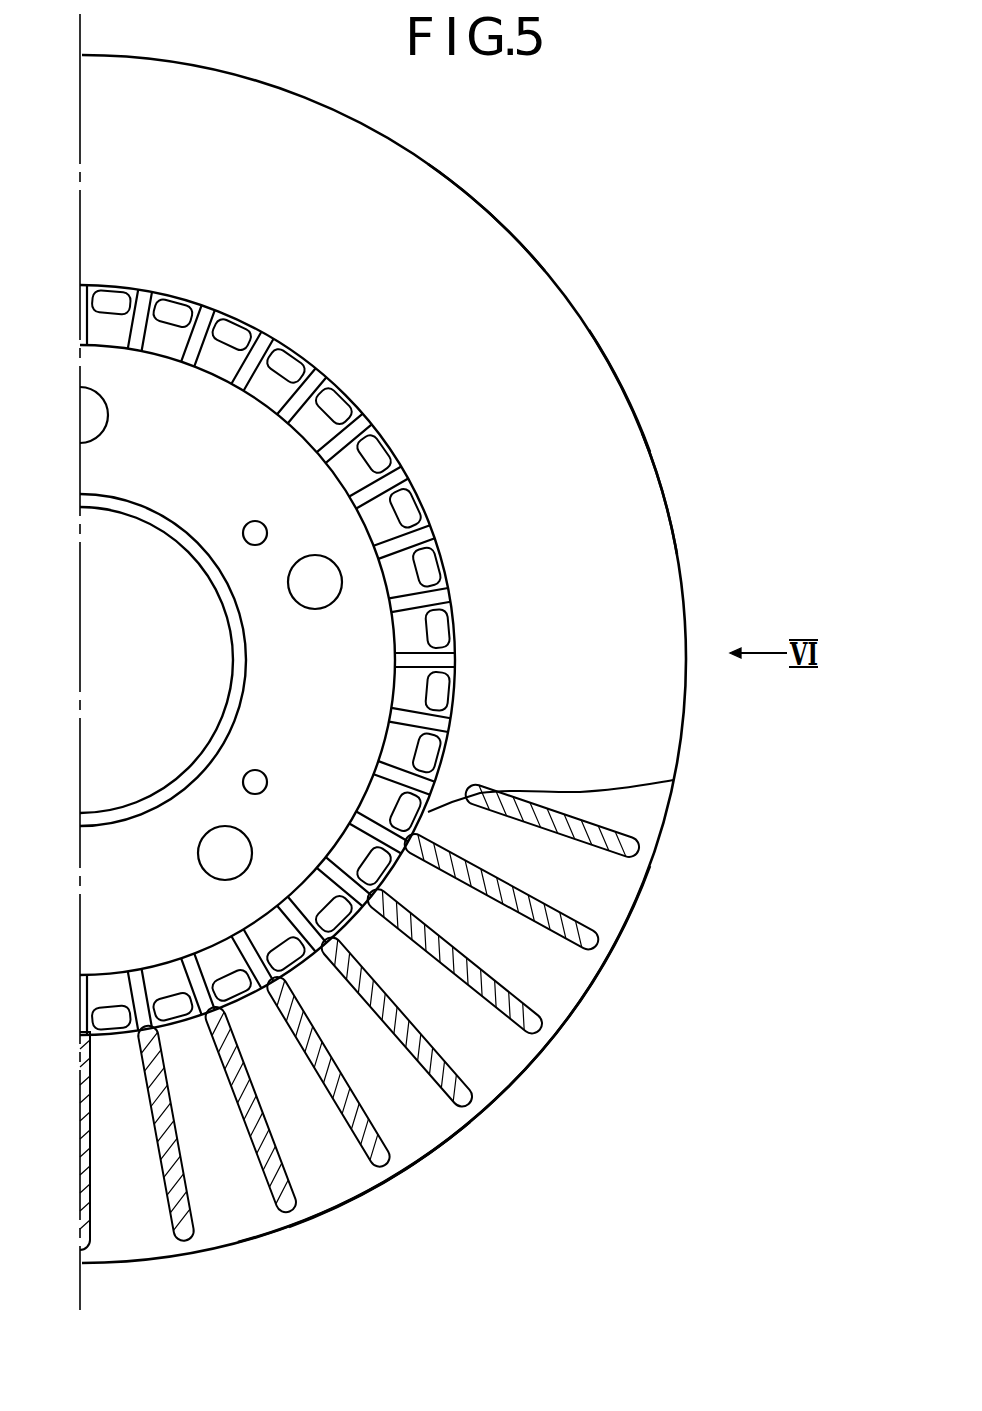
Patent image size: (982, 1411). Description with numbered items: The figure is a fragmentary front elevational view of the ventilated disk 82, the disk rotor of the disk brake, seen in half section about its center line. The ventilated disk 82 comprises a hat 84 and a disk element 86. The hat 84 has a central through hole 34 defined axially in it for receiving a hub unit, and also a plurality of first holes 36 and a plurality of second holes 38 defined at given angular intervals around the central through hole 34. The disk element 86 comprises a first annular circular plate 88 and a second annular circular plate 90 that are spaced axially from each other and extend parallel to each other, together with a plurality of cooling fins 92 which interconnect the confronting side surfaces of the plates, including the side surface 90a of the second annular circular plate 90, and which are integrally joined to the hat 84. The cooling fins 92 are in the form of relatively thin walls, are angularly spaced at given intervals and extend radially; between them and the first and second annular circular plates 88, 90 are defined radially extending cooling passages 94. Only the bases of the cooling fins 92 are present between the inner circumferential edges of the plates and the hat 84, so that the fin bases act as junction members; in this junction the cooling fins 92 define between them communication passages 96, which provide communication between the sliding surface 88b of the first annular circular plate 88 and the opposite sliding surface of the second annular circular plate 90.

The ventilated disk 82 is at (636, 98).
The hat 84 is at (162, 489).
The central through hole 34 is at (148, 680).
The first holes 36 is at (262, 527).
The second holes 38 is at (318, 607).
The disk element 86 is at (661, 451).
The first annular circular plate 88 is at (605, 403).
The sliding surface 88b is at (498, 232).
The second annular circular plate 90 is at (569, 986).
The side surface 90a is at (608, 902).
The cooling fins 92 is at (430, 533).
The cooling passages 94 is at (420, 1132).
The communication passages 96 is at (450, 687).